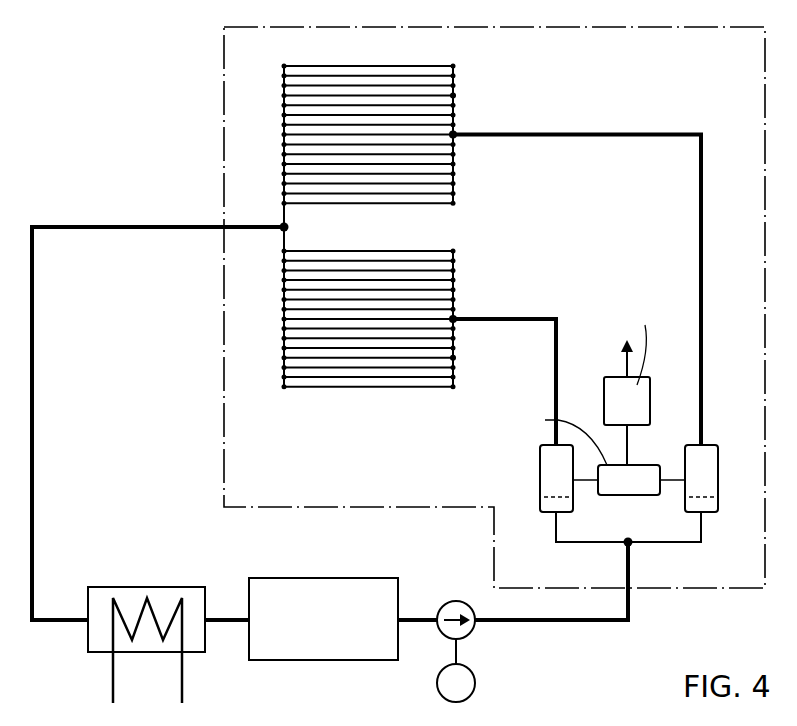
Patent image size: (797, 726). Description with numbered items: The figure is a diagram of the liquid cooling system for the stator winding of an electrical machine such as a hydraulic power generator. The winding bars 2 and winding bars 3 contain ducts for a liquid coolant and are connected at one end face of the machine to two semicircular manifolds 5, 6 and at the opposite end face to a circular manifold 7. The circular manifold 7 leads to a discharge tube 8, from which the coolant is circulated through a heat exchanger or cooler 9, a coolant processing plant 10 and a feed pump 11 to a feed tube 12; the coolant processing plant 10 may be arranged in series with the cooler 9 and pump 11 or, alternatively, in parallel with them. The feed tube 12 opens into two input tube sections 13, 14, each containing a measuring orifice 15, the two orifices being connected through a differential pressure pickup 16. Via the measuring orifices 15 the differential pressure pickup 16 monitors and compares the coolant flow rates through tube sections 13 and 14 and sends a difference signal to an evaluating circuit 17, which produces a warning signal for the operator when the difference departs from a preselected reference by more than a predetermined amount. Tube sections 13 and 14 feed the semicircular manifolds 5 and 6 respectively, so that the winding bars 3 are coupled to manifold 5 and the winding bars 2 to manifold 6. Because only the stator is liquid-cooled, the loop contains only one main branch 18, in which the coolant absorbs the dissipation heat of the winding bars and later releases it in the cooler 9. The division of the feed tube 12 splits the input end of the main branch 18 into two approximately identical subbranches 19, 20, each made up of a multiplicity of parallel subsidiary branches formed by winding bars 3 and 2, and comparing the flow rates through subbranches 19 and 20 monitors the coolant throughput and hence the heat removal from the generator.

The winding bars 2 is at (351, 72).
The winding bars 3 is at (352, 388).
The semicircular manifold 5 is at (455, 350).
The semicircular manifold 6 is at (455, 90).
The circular manifold 7 is at (289, 213).
The discharge tube 8 is at (136, 226).
The heat exchanger or cooler 9 is at (159, 597).
The coolant processing plant 10 is at (357, 648).
The feed pump 11 is at (452, 606).
The feed tube 12 is at (634, 606).
The input tube section 13 is at (584, 543).
The input tube section 14 is at (672, 543).
The measuring orifice 15 is at (540, 483).
The differential pressure pickup 16 is at (614, 496).
The evaluating circuit 17 is at (628, 370).
The main branch 18 is at (223, 343).
The subbranch 19 is at (524, 309).
The subbranch 20 is at (546, 125).